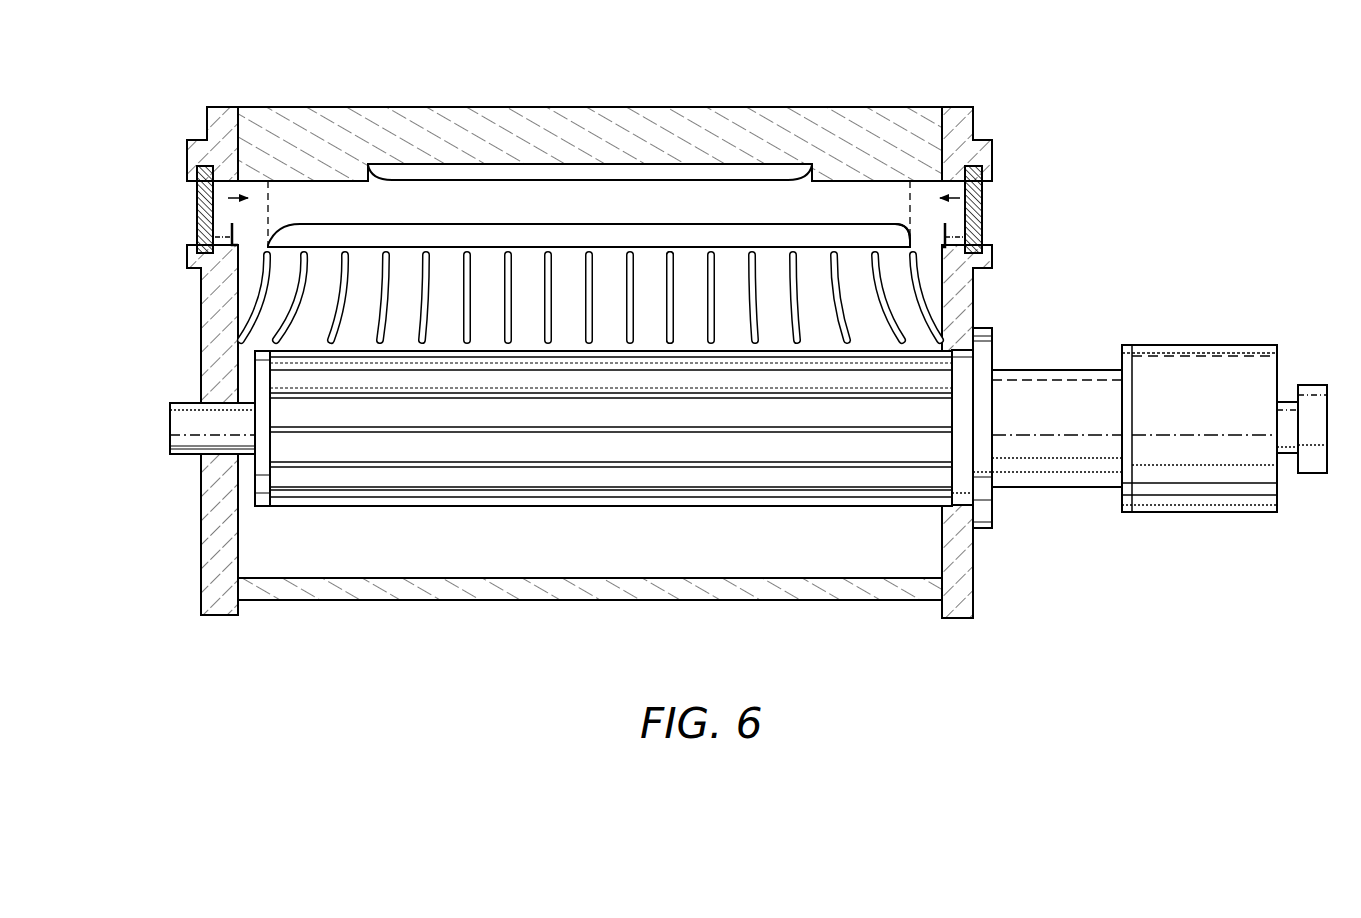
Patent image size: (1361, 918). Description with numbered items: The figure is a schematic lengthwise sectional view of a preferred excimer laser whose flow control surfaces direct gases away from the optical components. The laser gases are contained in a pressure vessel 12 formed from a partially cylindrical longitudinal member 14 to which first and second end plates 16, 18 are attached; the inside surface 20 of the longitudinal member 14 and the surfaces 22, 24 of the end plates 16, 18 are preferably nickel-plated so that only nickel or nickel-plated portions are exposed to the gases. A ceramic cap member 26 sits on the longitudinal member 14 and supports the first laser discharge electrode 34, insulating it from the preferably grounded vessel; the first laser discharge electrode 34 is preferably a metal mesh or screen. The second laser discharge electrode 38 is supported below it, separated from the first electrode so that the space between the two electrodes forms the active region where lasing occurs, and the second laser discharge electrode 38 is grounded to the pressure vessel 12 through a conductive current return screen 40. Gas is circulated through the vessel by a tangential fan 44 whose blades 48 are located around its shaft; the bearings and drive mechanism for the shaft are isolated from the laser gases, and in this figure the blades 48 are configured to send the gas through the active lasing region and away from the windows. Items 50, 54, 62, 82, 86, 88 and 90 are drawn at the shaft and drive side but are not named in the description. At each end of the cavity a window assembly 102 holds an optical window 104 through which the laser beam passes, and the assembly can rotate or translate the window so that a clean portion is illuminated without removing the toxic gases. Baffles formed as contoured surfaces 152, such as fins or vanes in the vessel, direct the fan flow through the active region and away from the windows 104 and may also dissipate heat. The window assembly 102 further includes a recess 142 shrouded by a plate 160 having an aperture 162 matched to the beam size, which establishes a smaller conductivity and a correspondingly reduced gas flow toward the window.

The pressure vessel 12 is at (258, 602).
The longitudinal member 14 is at (485, 600).
The first end plate 16 is at (200, 577).
The second end plate 18 is at (973, 590).
The inside surface of longitudinal member 20 is at (410, 578).
The inside surface of first end plate 22 is at (238, 533).
The inside surface of second end plate 24 is at (942, 552).
The ceramic cap member 26 is at (867, 107).
The first laser discharge electrode 34 is at (462, 163).
The second laser discharge electrode 38 is at (553, 222).
The current return screen 40 is at (270, 200).
The tangential fan 44 is at (580, 506).
The blades 48 is at (538, 350).
The bearing hub 50 is at (1022, 490).
The drive shaft 54 is at (1073, 370).
The slot 62 is at (665, 302).
The motor 82 is at (1200, 345).
The coupling knob 86 is at (1312, 385).
The bearing 88 is at (178, 395).
The left shaft 90 is at (182, 455).
The window assembly 102 is at (188, 150).
The optical window 104 is at (198, 213).
The recess 142 is at (223, 233).
The contoured surfaces 152 is at (248, 310).
The plate 160 is at (942, 228).
The aperture 162 is at (198, 187).